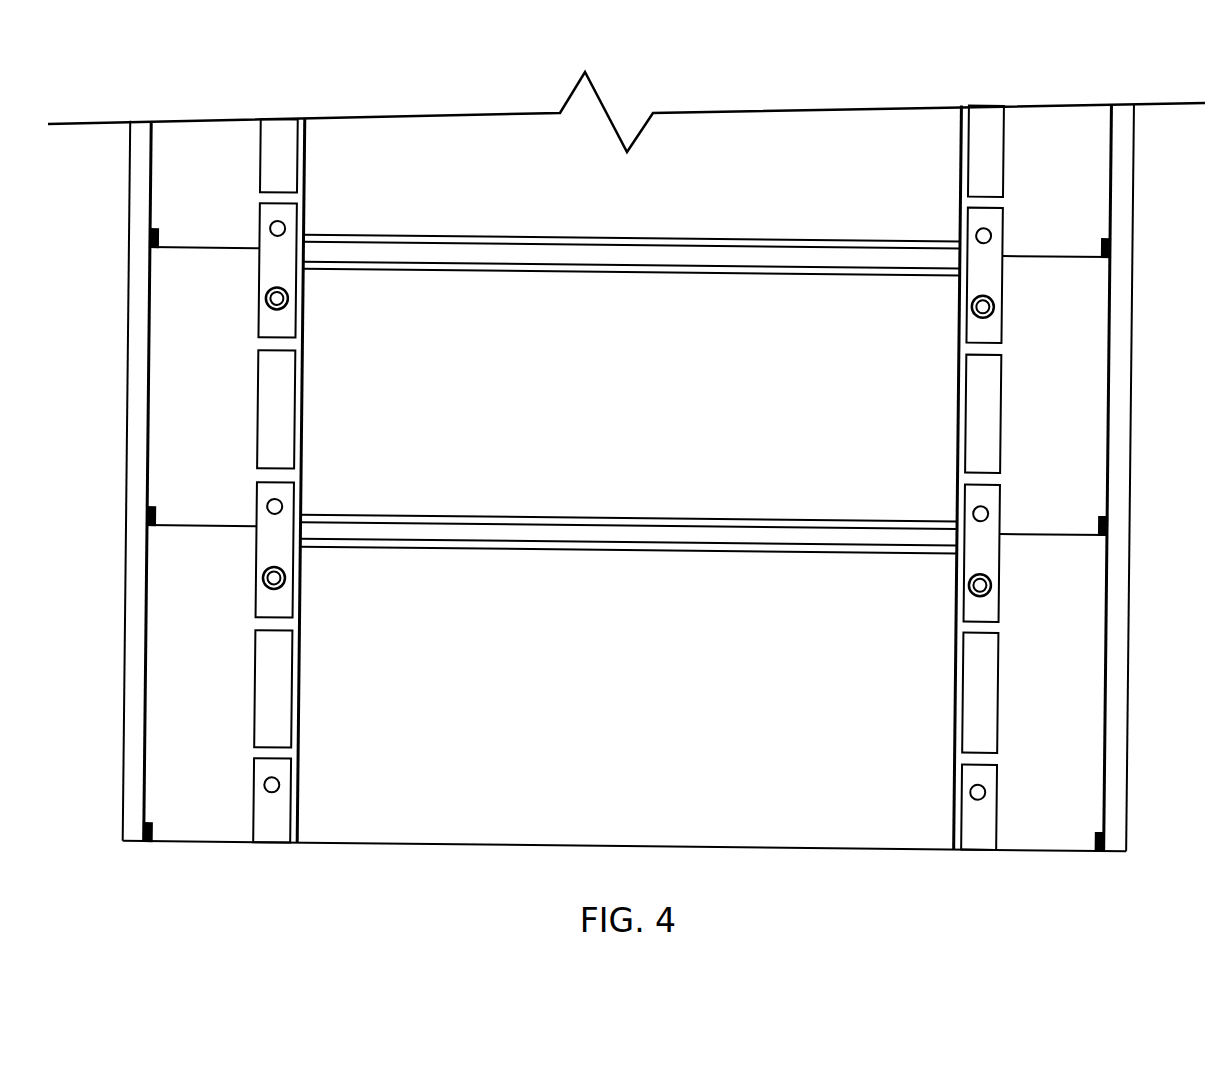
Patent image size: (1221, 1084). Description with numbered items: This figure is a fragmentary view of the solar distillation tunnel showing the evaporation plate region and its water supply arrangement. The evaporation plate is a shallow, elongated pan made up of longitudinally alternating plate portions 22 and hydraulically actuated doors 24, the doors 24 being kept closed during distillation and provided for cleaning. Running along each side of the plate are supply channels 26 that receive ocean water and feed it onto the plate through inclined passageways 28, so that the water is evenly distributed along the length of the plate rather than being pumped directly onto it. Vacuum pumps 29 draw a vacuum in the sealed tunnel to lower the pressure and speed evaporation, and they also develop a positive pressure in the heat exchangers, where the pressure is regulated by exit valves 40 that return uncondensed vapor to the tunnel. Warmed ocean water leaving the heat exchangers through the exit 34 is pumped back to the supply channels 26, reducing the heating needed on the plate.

The plate portions 22 is at (675, 422).
The hydraulically actuated doors 24 is at (632, 265).
The supply channels 26 is at (210, 847).
The inclined passageways 28 is at (257, 199).
The vacuum pumps 29 is at (286, 302).
The exit 34 is at (147, 236).
The exit valves 40 is at (267, 232).